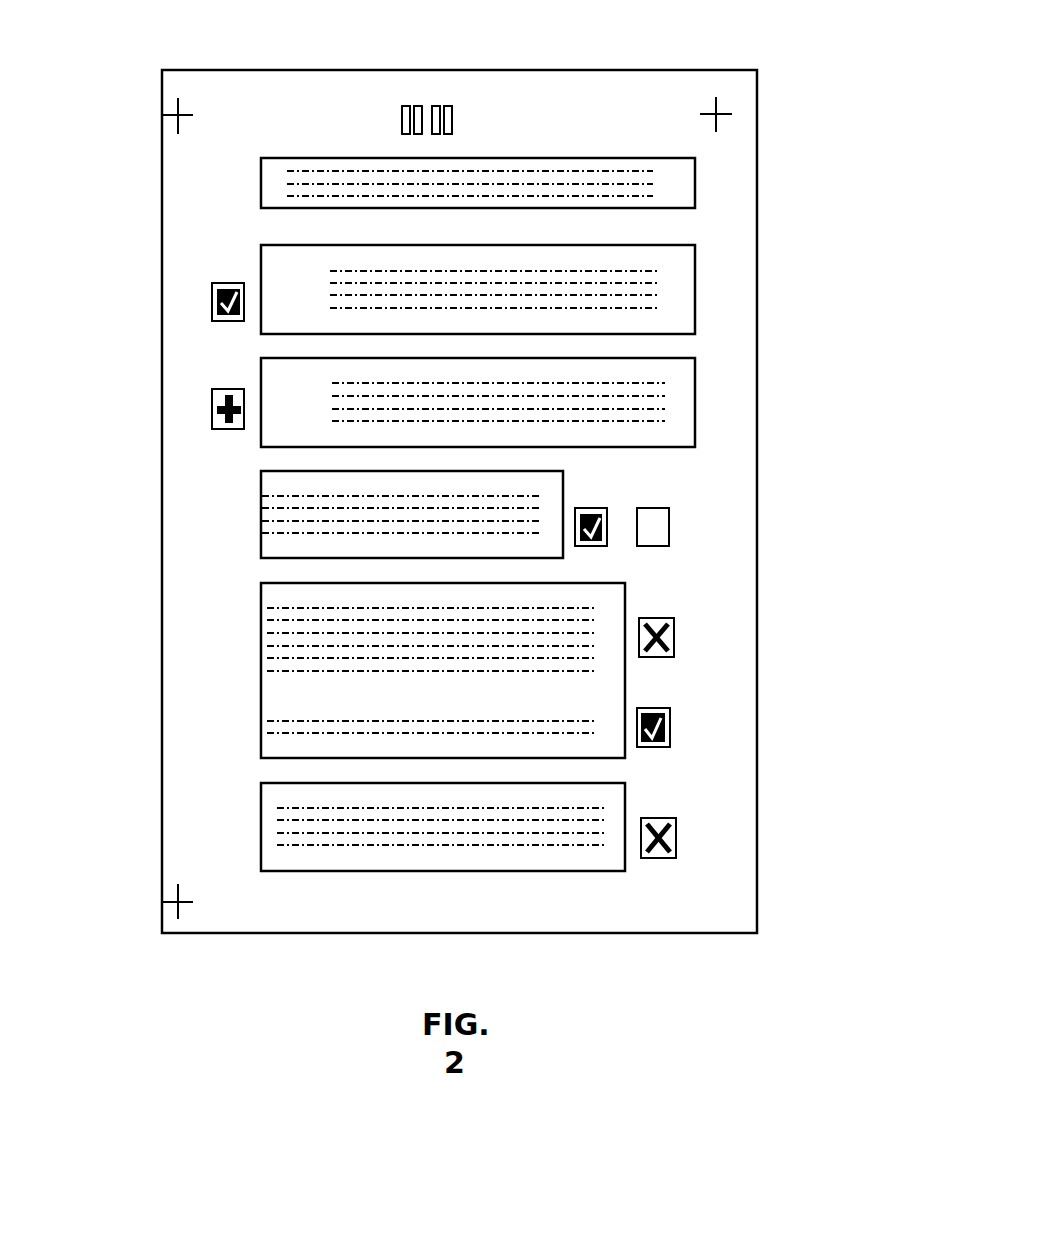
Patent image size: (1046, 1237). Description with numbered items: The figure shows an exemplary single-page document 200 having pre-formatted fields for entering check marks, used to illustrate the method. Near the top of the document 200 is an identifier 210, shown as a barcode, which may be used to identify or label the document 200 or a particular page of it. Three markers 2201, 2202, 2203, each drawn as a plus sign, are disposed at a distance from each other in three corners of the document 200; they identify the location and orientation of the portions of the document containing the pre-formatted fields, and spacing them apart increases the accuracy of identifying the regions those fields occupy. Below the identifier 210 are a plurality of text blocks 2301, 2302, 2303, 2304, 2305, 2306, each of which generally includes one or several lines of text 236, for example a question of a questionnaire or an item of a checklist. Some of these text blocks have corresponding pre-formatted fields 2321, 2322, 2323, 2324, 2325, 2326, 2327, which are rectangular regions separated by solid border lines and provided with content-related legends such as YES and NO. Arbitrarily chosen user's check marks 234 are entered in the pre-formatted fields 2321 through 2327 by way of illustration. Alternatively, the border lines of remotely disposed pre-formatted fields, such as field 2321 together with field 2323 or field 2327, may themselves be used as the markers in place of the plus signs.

The document 200 is at (765, 31).
The identifier 210 is at (407, 105).
The marker 2201 is at (175, 127).
The marker 2202 is at (731, 125).
The marker 2203 is at (172, 913).
The text block 2301 is at (711, 184).
The text block 2302 is at (711, 285).
The text block 2303 is at (711, 375).
The text block 2304 is at (180, 523).
The text block 2305 is at (180, 673).
The text block 2306 is at (180, 810).
The pre-formatted field 2321 is at (205, 296).
The pre-formatted field 2322 is at (205, 421).
The pre-formatted field 2323 is at (613, 508).
The pre-formatted field 2324 is at (689, 533).
The pre-formatted field 2325 is at (693, 640).
The pre-formatted field 2326 is at (689, 724).
The pre-formatted field 2327 is at (689, 836).
The check mark 234 is at (458, 545).
The lines of text 236 is at (517, 307).